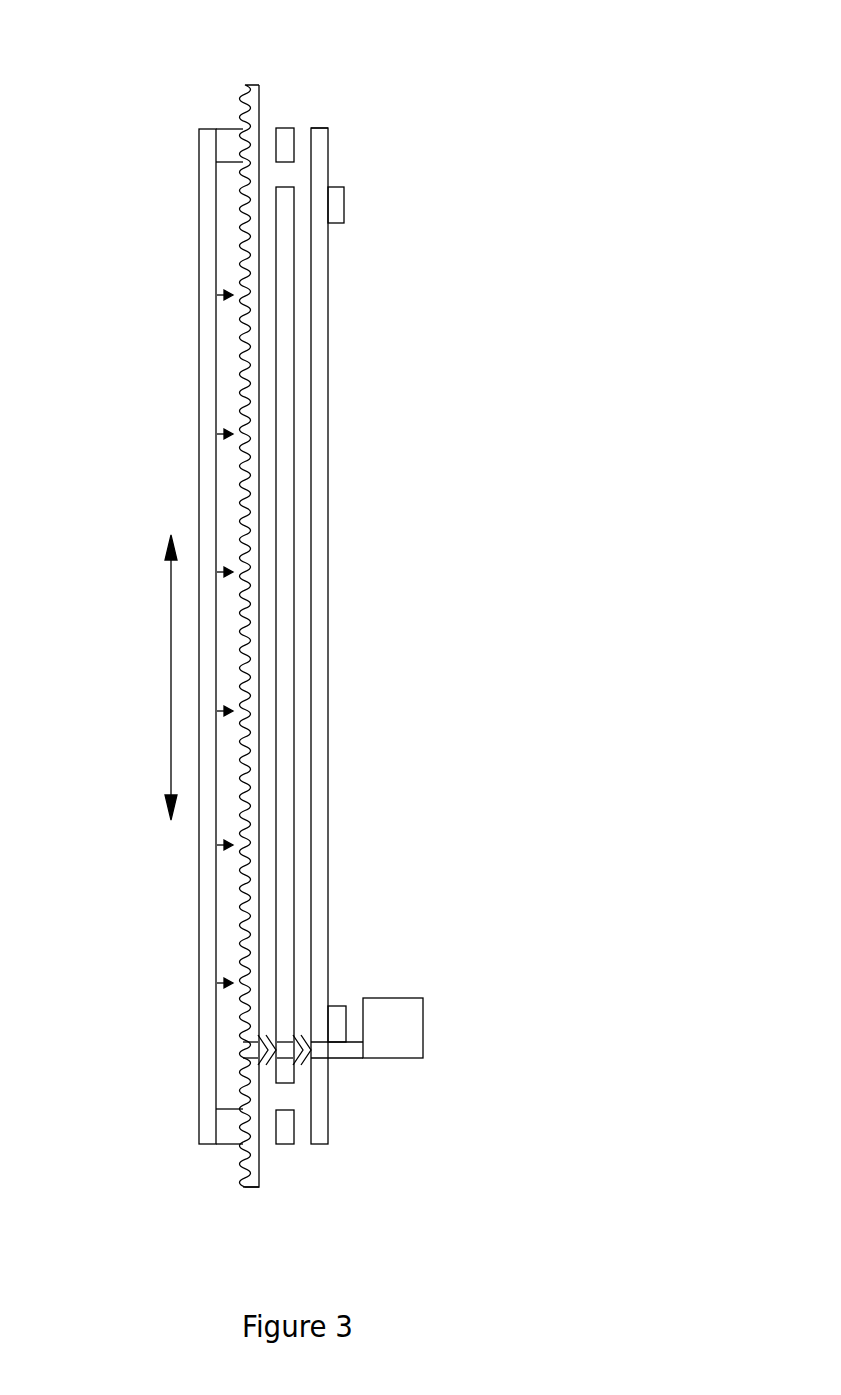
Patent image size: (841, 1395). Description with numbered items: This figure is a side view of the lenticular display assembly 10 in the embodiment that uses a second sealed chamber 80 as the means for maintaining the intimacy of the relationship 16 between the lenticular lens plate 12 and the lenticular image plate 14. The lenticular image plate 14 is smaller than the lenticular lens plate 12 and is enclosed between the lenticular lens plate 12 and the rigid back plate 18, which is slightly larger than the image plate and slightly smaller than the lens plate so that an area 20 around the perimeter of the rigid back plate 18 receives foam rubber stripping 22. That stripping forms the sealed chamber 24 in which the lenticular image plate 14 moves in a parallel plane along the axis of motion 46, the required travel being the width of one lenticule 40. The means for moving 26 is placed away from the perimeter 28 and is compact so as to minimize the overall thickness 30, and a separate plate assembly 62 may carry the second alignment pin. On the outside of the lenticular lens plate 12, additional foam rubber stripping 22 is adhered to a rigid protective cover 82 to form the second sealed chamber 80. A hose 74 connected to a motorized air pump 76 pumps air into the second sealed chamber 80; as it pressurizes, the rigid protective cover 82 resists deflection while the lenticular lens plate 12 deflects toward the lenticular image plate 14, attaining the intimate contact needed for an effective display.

The lenticular display assembly 10 is at (335, 60).
The lenticular lens plate 12 is at (247, 179).
The lenticular image plate 14 is at (283, 262).
The means for maintaining the intimacy of the relationship 16 is at (267, 298).
The rigid back plate 18 is at (320, 177).
The area around the perimeter of the rigid back plate 20 is at (320, 150).
The foam rubber stripping 22 is at (280, 140).
The sealed chamber 24 is at (287, 1100).
The means for moving 26 is at (340, 1010).
The perimeter 28 is at (243, 1187).
The thickness 30 is at (317, 1202).
The lenticule 40 is at (243, 492).
The axis of motion 46 is at (154, 677).
The separate plate assembly 62 is at (337, 204).
The hose 74 is at (345, 1050).
The motorized air pump 76 is at (408, 1042).
The second sealed chamber 80 is at (228, 343).
The rigid protective cover 82 is at (206, 395).